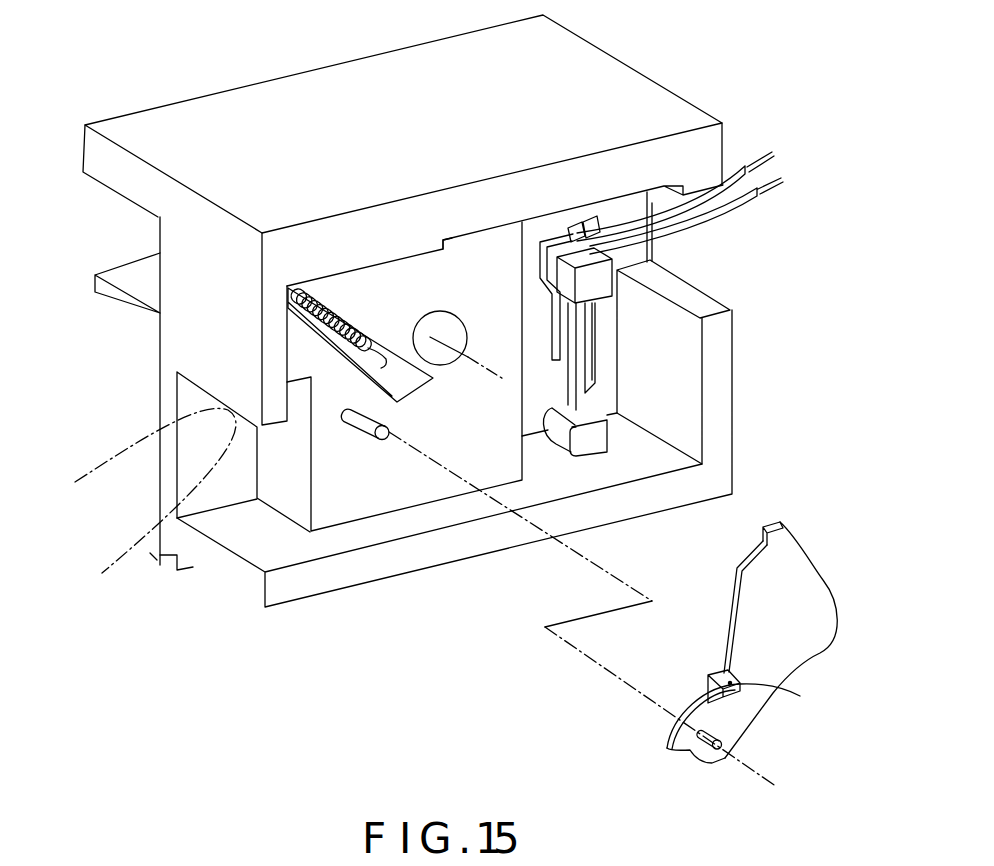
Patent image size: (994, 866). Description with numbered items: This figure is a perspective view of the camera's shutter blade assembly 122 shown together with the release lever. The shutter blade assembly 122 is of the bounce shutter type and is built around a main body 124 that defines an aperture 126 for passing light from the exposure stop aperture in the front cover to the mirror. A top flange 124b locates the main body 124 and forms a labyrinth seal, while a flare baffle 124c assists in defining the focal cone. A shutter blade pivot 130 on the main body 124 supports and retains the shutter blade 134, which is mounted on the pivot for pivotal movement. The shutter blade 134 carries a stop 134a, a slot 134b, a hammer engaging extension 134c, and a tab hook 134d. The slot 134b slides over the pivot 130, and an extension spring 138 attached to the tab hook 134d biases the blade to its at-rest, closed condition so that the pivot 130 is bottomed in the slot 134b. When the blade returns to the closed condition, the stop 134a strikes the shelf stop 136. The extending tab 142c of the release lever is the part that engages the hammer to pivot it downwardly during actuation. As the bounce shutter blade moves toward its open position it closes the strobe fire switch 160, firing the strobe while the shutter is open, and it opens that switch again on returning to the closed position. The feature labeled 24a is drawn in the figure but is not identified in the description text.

The shutter blade assembly 122 is at (295, 78).
The main body 124 is at (647, 81).
The top flange 124b is at (83, 156).
The flare baffle 124c is at (105, 307).
The shelf stop 136 is at (450, 242).
The aperture 126 is at (442, 332).
The extension spring 138 is at (332, 338).
The shutter blade pivot 130 is at (354, 432).
The strobe fire switch 160 is at (562, 432).
The extending tab 142c is at (90, 466).
The mounting tab 24a is at (183, 580).
The shutter blade 134 is at (800, 547).
The stop 134a is at (758, 522).
The slot 134b is at (703, 768).
The hammer engaging extension 134c is at (668, 722).
The tab hook 134d is at (781, 688).